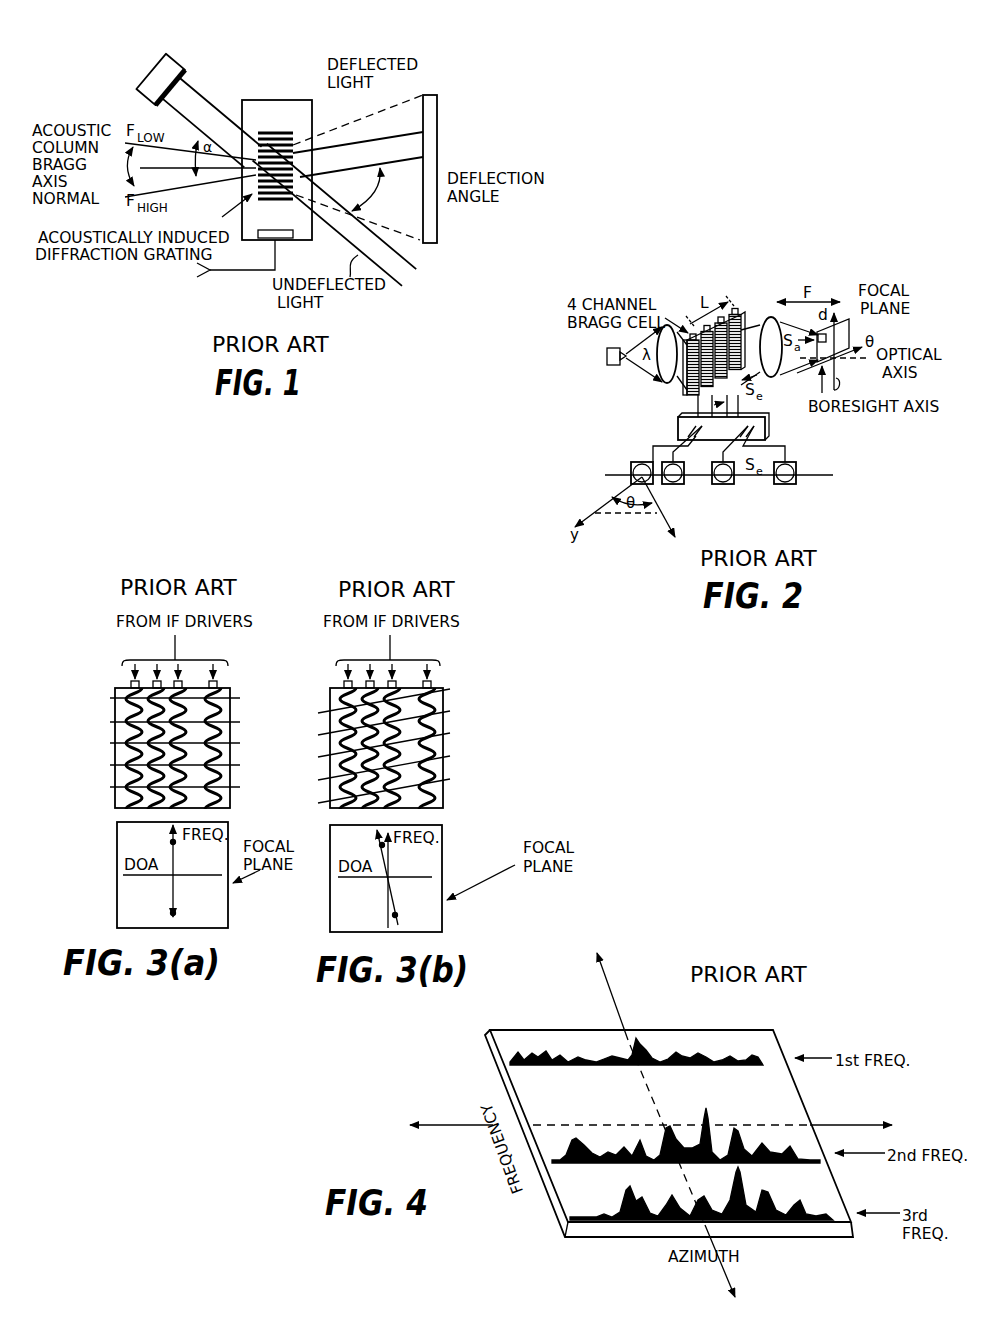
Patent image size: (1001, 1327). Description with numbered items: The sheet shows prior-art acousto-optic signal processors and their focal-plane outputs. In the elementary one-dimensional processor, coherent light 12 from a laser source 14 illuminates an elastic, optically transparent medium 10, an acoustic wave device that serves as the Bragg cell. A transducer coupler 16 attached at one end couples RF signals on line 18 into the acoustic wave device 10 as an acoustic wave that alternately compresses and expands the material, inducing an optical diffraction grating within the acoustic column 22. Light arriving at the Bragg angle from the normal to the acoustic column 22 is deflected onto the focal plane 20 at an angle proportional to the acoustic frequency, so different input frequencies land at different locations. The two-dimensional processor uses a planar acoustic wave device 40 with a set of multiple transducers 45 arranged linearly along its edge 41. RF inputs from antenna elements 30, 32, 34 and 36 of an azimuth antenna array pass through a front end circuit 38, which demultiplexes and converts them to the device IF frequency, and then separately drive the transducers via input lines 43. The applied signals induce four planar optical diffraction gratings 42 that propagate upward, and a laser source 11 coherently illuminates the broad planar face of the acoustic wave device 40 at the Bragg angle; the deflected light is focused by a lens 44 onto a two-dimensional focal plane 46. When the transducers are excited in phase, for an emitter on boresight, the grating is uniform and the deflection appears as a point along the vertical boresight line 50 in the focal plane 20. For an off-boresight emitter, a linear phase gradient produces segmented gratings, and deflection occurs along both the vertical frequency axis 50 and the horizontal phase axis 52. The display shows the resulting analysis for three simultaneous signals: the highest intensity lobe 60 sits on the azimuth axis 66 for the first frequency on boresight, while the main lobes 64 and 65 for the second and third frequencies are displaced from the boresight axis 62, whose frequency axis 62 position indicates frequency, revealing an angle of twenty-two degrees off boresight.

In FIG. 1, the acoustic wave device 10 is at (275, 100).
In FIG. 1, the coherent light 12 is at (214, 97).
In FIG. 1, the laser source 14 is at (140, 62).
In FIG. 1, the transducer coupler 16 is at (293, 238).
In FIG. 1, the RF input line 18 is at (239, 272).
In FIG. 1, the focal plane 20 is at (437, 120).
In FIG. 3A, the focal plane 20 is at (117, 878).
In FIG. 3B, the focal plane 20 is at (443, 868).
In FIG. 1, the acoustic column 22 is at (276, 132).
In FIG. 2, the laser source 11 is at (607, 357).
In FIG. 2, the antenna element 30 is at (633, 463).
In FIG. 2, the antenna element 32 is at (666, 486).
In FIG. 2, the antenna element 34 is at (717, 486).
In FIG. 2, the antenna element 36 is at (783, 486).
In FIG. 2, the front end circuit 38 is at (768, 427).
In FIG. 2, the planar acoustic wave device 40 is at (733, 304).
In FIG. 3A, the planar acoustic wave device 40 is at (236, 752).
In FIG. 3B, the planar acoustic wave device 40 is at (452, 755).
In FIG. 2, the edge of the acoustic wave device 41 is at (683, 385).
In FIG. 2, the planar optical diffraction gratings 42 is at (740, 312).
In FIG. 2, the input lines 43 is at (738, 405).
In FIG. 2, the lens 44 is at (766, 330).
In FIG. 3A, the set of multiple transducers 45 is at (222, 680).
In FIG. 3B, the set of multiple transducers 45 is at (444, 682).
In FIG. 2, the two-dimensional focal plane 46 is at (849, 325).
In FIG. 3A, the vertical frequency axis 50 is at (175, 856).
In FIG. 3B, the vertical frequency axis 50 is at (388, 860).
In FIG. 3A, the horizontal phase axis 52 is at (179, 880).
In FIG. 3B, the horizontal phase axis 52 is at (371, 878).
In FIG. 4, the highest intensity lobe 60 is at (638, 1035).
In FIG. 4, the frequency axis 62 is at (607, 978).
In FIG. 4, the main lobe 64 is at (710, 1114).
In FIG. 4, the main lobe 65 is at (740, 1176).
In FIG. 4, the azimuth axis 66 is at (428, 1133).